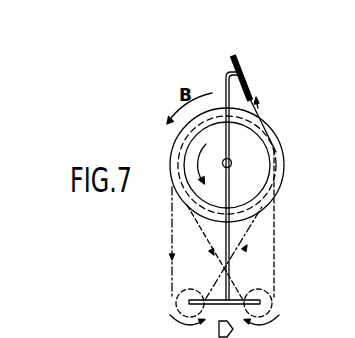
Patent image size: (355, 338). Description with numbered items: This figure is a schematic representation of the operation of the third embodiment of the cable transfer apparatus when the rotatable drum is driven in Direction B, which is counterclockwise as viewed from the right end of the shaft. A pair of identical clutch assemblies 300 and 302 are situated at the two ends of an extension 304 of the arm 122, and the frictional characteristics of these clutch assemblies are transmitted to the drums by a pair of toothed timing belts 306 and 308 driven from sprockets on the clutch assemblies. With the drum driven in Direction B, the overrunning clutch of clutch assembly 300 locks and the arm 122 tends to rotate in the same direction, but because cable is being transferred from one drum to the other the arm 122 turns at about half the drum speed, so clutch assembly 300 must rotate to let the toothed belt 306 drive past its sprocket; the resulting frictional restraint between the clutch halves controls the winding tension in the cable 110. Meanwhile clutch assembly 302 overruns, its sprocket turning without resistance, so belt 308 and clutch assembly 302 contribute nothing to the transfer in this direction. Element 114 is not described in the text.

The cable 110 is at (256, 111).
The handle rod 114 is at (240, 60).
The arm 122 is at (230, 148).
The clutch assembly 300 is at (182, 305).
The clutch assembly 302 is at (272, 296).
The extension 304 is at (227, 235).
The toothed timing belt 306 is at (172, 274).
The toothed timing belt 308 is at (273, 248).